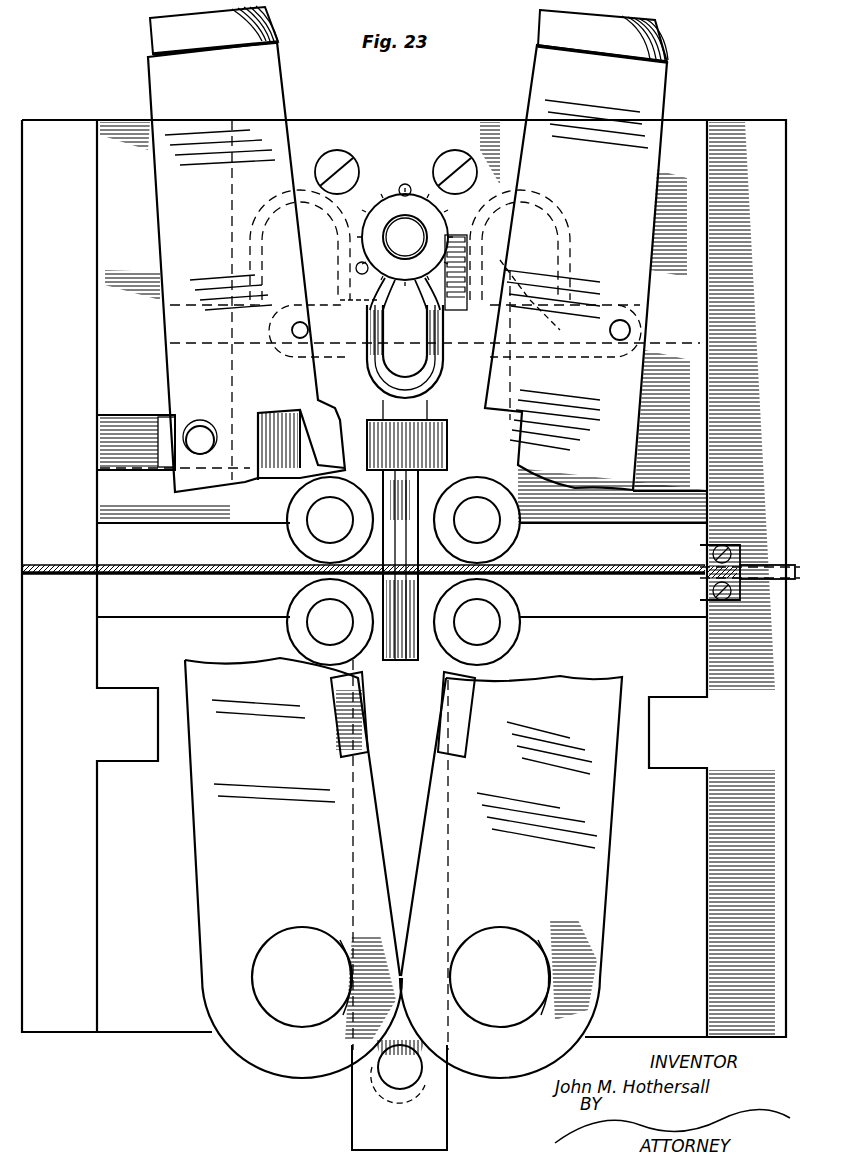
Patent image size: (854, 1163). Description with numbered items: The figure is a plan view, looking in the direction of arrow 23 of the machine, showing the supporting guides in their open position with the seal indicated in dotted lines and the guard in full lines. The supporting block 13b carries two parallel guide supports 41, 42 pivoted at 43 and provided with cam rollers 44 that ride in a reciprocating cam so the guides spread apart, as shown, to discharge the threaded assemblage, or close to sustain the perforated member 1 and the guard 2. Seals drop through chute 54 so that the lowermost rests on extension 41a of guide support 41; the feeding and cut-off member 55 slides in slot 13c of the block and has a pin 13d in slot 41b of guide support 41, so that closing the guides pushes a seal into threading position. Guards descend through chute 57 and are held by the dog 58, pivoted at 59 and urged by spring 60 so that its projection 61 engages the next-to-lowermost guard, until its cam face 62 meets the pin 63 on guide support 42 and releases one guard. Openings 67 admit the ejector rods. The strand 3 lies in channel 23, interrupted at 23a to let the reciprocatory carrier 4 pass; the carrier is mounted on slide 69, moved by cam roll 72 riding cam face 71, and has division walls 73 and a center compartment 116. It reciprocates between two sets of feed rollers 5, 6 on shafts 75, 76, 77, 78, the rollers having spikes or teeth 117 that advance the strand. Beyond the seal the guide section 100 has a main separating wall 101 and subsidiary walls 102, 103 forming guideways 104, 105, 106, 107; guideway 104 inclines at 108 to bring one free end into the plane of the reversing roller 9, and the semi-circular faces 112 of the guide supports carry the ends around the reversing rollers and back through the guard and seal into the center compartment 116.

The perforated member 1 is at (440, 448).
The gripping and severing member or guard 2 is at (438, 378).
The strand 3 is at (560, 570).
The reciprocatory carrier 4 is at (410, 548).
The feed rollers 5 is at (288, 630).
The feed rollers 6 is at (298, 542).
The reversing roller 9 is at (450, 208).
The supporting block 13b is at (404, 578).
The slot 13c is at (135, 415).
The pin 13d is at (203, 430).
The channel 23 is at (170, 578).
The interruption of channel 23a is at (352, 615).
The guide support 41 is at (246, 267).
The extension 41a is at (341, 434).
The slot 41b is at (193, 462).
The guide support 42 is at (596, 283).
The pivots 43 is at (401, 977).
The cam rollers 44 is at (409, 34).
The chute 54 is at (298, 460).
The feeding and cut-off member 55 is at (280, 412).
The chute 57 is at (440, 390).
The dog 58 is at (540, 295).
The pivot 59 is at (280, 342).
The spring 60 is at (505, 230).
The projection 61 is at (370, 372).
The cam face 62 is at (520, 328).
The pin 63 is at (630, 327).
The openings 67 is at (411, 185).
The slide 69 is at (455, 862).
The cam face 71 is at (430, 490).
The cam roll 72 is at (368, 1085).
The division walls 73 is at (455, 490).
The shaft 75 is at (495, 617).
The shaft 76 is at (495, 515).
The shaft 77 is at (312, 612).
The shaft 78 is at (312, 518).
The guide section 100 is at (360, 325).
The main separating wall 101 is at (354, 291).
The subsidiary separating wall 102 is at (440, 328).
The subsidiary separating wall 103 is at (370, 343).
The guideway 104 is at (430, 406).
The guideway 105 is at (440, 428).
The guideway 106 is at (380, 404).
The guideway 107 is at (385, 388).
The incline 108 is at (440, 348).
The semi-circular faces 112 is at (250, 200).
The center compartment 116 is at (413, 556).
The spikes or teeth 117 is at (495, 655).